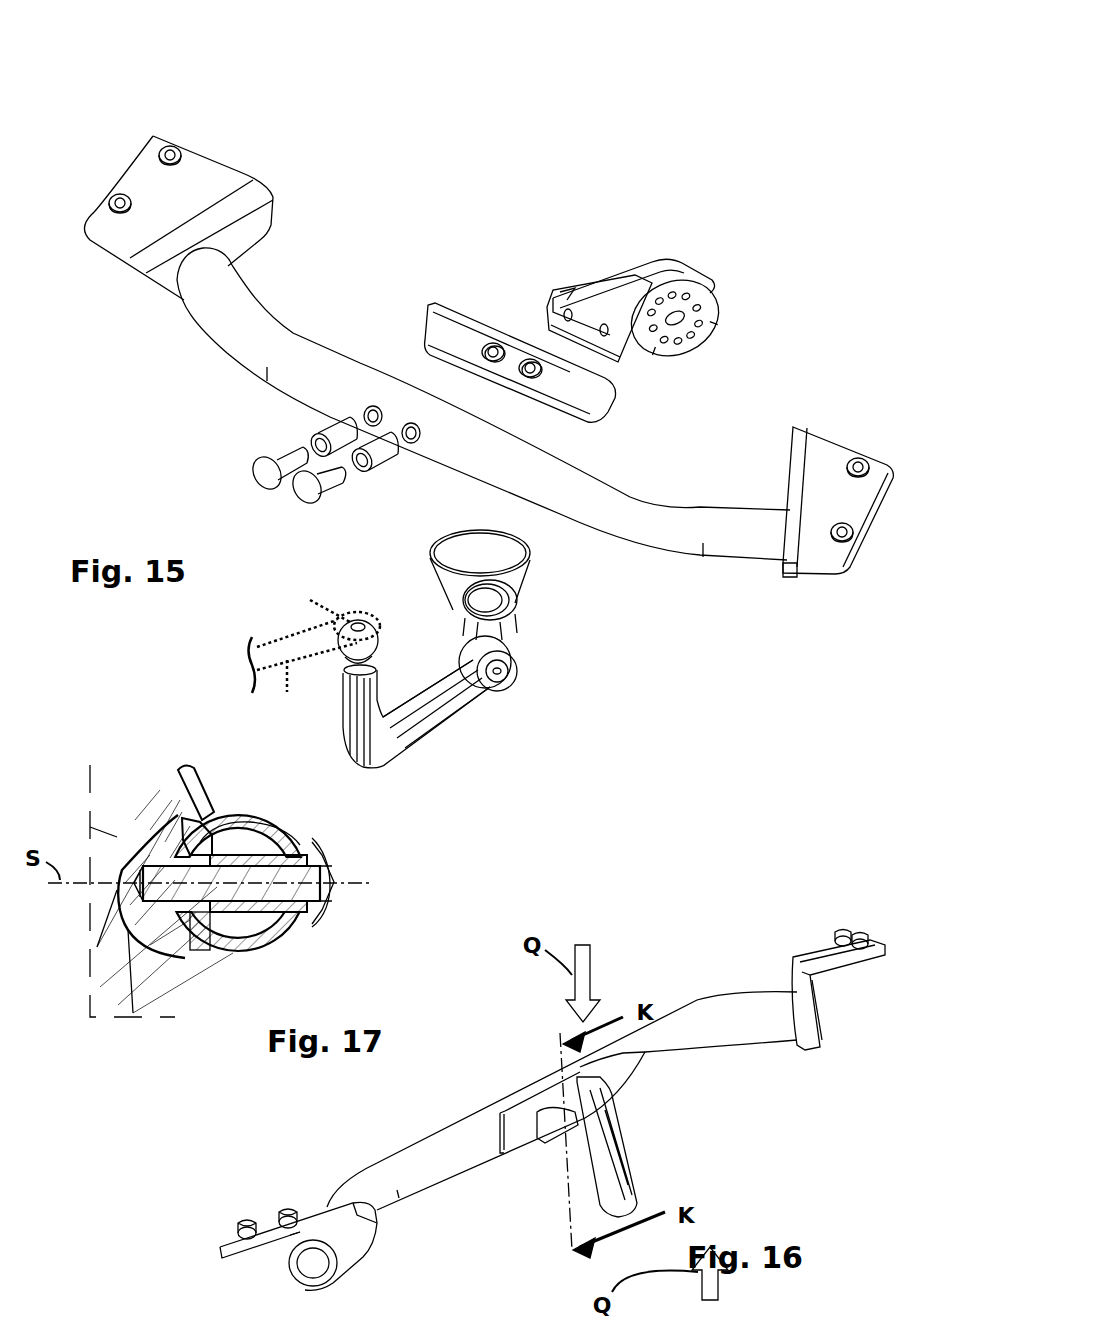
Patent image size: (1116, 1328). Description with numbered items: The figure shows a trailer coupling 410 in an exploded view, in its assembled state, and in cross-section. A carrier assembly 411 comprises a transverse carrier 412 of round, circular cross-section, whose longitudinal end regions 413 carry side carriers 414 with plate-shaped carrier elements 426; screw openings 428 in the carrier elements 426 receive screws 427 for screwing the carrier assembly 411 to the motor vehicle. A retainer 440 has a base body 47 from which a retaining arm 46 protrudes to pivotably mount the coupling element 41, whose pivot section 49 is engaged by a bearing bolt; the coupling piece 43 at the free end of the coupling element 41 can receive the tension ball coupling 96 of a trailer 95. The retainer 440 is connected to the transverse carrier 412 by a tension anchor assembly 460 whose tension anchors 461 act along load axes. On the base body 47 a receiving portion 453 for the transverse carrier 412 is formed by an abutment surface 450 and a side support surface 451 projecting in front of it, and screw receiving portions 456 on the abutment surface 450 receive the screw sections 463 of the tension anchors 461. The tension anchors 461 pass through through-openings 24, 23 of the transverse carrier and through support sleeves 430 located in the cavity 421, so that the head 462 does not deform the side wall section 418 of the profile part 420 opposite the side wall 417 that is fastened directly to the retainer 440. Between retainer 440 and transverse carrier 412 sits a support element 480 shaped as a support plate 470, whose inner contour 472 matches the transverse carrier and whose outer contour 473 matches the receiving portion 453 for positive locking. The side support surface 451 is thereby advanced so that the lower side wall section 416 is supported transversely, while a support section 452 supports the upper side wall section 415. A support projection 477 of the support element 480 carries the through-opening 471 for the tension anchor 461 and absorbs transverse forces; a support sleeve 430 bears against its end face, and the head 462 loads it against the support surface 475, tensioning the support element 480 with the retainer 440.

In FIG. 15, the trailer coupling 410 is at (778, 155).
In FIG. 15, the carrier assembly 411 is at (700, 507).
In FIG. 16, the carrier assembly 411 is at (697, 1010).
In FIG. 15, the transverse carrier 412 is at (730, 565).
In FIG. 17, the transverse carrier 412 is at (273, 827).
In FIG. 16, the transverse carrier 412 is at (775, 1042).
In FIG. 15, the longitudinal end regions 413 is at (195, 295).
In FIG. 15, the side carriers 414 is at (218, 160).
In FIG. 16, the side carriers 414 is at (815, 955).
In FIG. 17, the upper side wall section 415 is at (240, 823).
In FIG. 17, the lower side wall section 416 is at (213, 933).
In FIG. 17, the side wall 417 is at (237, 833).
In FIG. 17, the side wall section 418 is at (318, 860).
In FIG. 15, the profile part 420 is at (196, 325).
In FIG. 17, the cavity 421 is at (248, 928).
In FIG. 15, the carrier elements 426 is at (815, 565).
In FIG. 15, the screws 427 is at (165, 152).
In FIG. 15, the screw openings 428 is at (858, 475).
In FIG. 15, the support sleeves 430 is at (322, 448).
In FIG. 17, the support sleeves 430 is at (274, 857).
In FIG. 15, the retainer 440 is at (705, 268).
In FIG. 16, the retainer 440 is at (625, 1140).
In FIG. 15, the abutment surface 450 is at (626, 345).
In FIG. 15, the side support surface 451 is at (614, 360).
In FIG. 17, the support section 452 is at (213, 810).
In FIG. 15, the receiving portion 453 is at (568, 310).
In FIG. 15, the screw receiving portions 456 is at (603, 325).
In FIG. 17, the screw receiving portions 456 is at (140, 925).
In FIG. 15, the tension anchor assembly 460 is at (258, 460).
In FIG. 15, the tension anchors 461 is at (265, 480).
In FIG. 17, the tension anchors 461 is at (287, 892).
In FIG. 17, the head 462 is at (333, 905).
In FIG. 17, the screw sections 463 is at (108, 860).
In FIG. 15, the support plate 470 is at (437, 310).
In FIG. 15, the through-opening 471 is at (488, 356).
In FIG. 17, the through-opening 471 is at (187, 913).
In FIG. 15, the inner contour 472 is at (608, 402).
In FIG. 15, the outer contour 473 is at (600, 414).
In FIG. 15, the support surface 475 is at (485, 355).
In FIG. 17, the support surface 475 is at (213, 907).
In FIG. 15, the support projection 477 is at (528, 378).
In FIG. 17, the support projection 477 is at (193, 913).
In FIG. 15, the support element 480 is at (494, 348).
In FIG. 17, the through-opening 23 is at (187, 813).
In FIG. 15, the through-opening 24 is at (374, 420).
In FIG. 15, the coupling element 41 is at (440, 713).
In FIG. 15, the coupling piece 43 is at (375, 637).
In FIG. 15, the retaining arm 46 is at (715, 305).
In FIG. 15, the base body 47 is at (628, 272).
In FIG. 15, the pivot section 49 is at (520, 585).
In FIG. 15, the trailer 95 is at (277, 681).
In FIG. 15, the tension ball coupling 96 is at (318, 623).